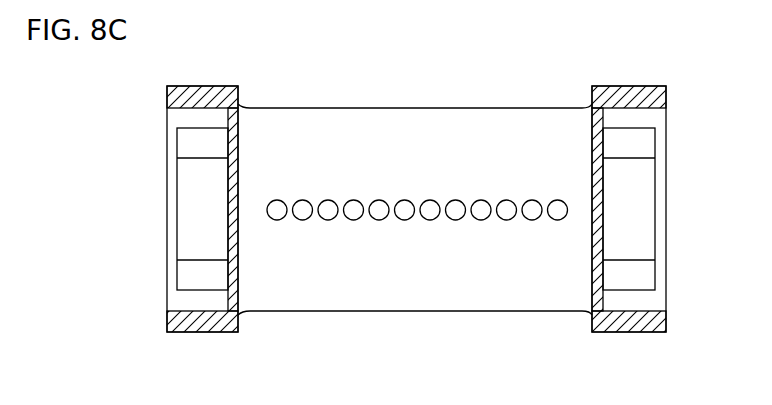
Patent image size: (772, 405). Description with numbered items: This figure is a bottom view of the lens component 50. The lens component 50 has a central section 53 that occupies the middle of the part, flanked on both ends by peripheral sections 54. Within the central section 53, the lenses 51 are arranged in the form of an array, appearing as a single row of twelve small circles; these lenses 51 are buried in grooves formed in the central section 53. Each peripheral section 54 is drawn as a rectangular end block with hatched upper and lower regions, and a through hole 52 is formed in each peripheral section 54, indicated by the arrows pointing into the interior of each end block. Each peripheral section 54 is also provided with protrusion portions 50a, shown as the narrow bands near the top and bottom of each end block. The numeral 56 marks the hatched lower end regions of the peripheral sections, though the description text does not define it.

The lens component 50 is at (664, 36).
The protrusion portions 50a is at (190, 143).
The lenses 51 is at (322, 204).
The through holes 52 is at (196, 200).
The central section 53 is at (488, 108).
The peripheral sections 54 is at (200, 86).
The lower electrode portion 56 is at (205, 328).